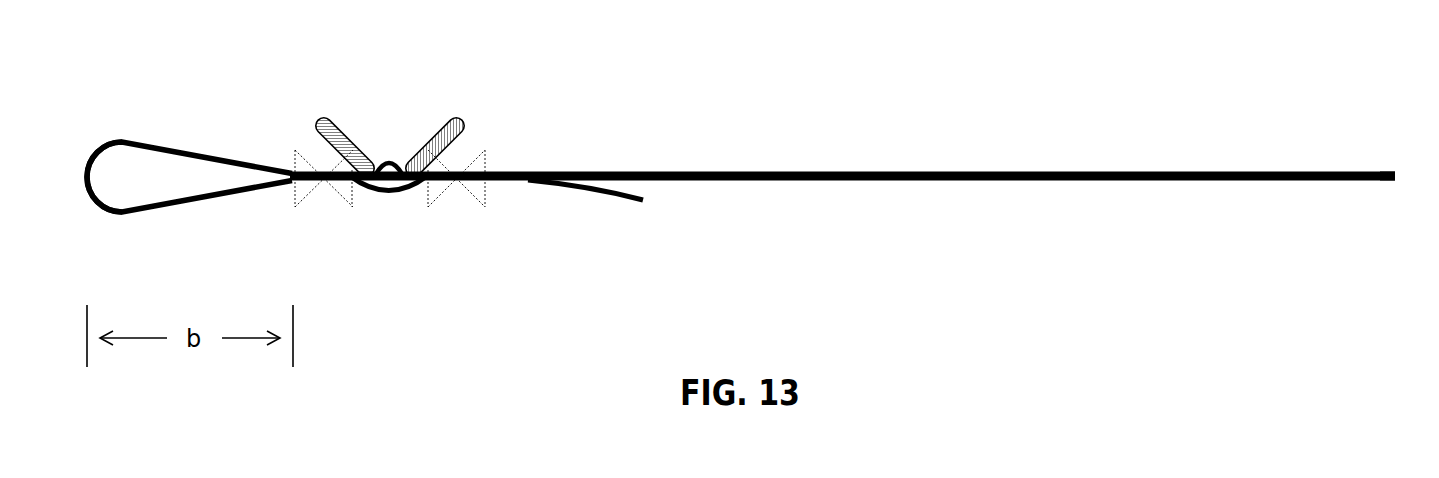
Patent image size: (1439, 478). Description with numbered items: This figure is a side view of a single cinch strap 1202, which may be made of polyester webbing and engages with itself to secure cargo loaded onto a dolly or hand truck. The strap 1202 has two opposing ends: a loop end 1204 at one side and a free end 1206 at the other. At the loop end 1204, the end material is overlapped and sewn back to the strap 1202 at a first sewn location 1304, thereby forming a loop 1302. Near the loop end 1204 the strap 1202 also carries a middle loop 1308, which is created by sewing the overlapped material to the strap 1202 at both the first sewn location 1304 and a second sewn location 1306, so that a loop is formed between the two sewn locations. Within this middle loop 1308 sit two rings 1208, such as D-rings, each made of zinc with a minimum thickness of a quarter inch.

The single cinch strap 1202 is at (862, 172).
The loop end 1204 is at (93, 150).
The free end 1206 is at (1390, 172).
The rings 1208 is at (330, 117).
The loop 1302 is at (150, 150).
The first sewn location 1304 is at (320, 177).
The second sewn location 1306 is at (460, 178).
The middle loop 1308 is at (392, 191).